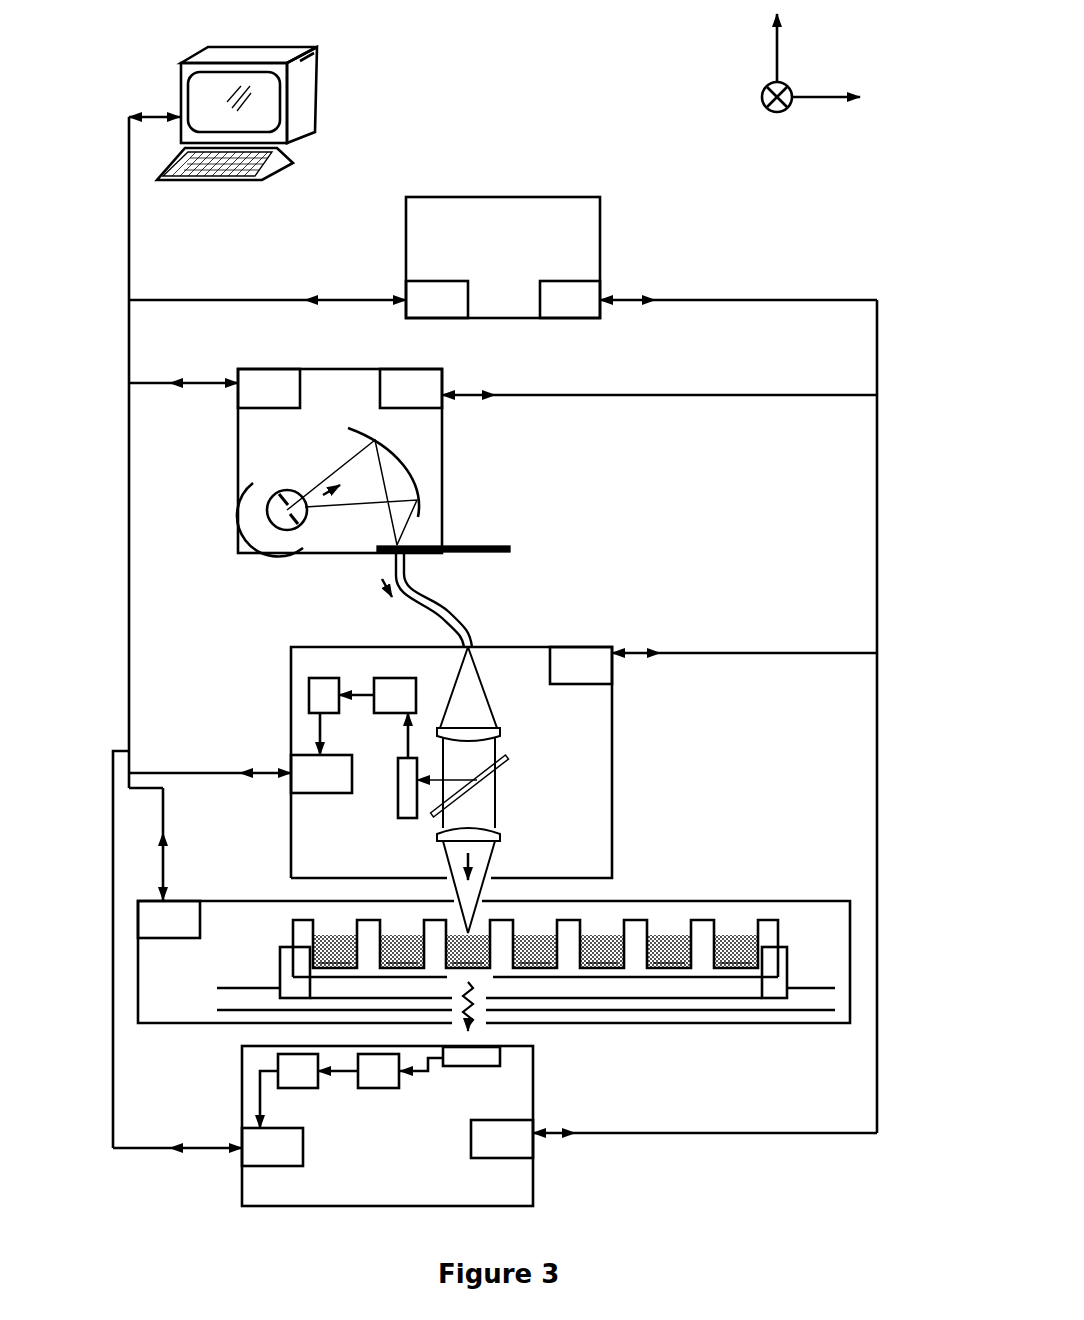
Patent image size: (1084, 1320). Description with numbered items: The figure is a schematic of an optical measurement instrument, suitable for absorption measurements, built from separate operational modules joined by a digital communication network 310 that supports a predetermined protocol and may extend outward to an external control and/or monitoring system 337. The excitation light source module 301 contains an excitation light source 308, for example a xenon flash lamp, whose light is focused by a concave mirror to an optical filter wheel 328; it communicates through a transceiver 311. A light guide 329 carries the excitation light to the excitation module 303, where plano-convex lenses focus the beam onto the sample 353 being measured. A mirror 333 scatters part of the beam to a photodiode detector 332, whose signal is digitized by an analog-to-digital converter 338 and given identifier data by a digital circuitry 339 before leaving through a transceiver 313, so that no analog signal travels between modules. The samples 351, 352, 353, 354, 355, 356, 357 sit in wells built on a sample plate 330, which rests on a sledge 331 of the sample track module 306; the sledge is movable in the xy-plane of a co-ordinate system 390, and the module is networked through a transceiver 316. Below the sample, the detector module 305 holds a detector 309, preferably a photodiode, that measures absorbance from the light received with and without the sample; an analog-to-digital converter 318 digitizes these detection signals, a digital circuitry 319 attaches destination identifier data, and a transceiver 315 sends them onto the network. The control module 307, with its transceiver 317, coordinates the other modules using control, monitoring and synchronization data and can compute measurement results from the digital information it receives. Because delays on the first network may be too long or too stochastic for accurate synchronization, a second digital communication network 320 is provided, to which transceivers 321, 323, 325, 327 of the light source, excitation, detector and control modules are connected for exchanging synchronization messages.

The excitation light source module 301 is at (330, 452).
The excitation module 303 is at (507, 790).
The detector module 305 is at (442, 1126).
The sample track module 306 is at (494, 931).
The control module 307 is at (527, 218).
The excitation light source 308 is at (285, 490).
The detector 309 is at (450, 1066).
The digital communication network 310 is at (129, 262).
The transceiver 311 is at (302, 393).
The transceiver 313 is at (300, 793).
The transceiver 315 is at (258, 1167).
The transceiver 316 is at (183, 900).
The transceiver 317 is at (468, 296).
The analog-to-digital converter 318 is at (365, 1088).
The digital circuitry 319 is at (289, 1088).
The digital communication network 320 is at (877, 472).
The transceiver 321 is at (443, 372).
The transceiver 323 is at (577, 684).
The transceiver 325 is at (478, 1158).
The transceiver 327 is at (602, 287).
The optical filter wheel 328 is at (488, 547).
The light guide 329 is at (452, 614).
The sample plate 330 is at (500, 948).
The sledge 331 is at (280, 965).
The photodiode detector 332 is at (412, 818).
The mirror 333 is at (510, 759).
The external control and/or monitoring system 337 is at (308, 97).
The analog-to-digital converter 338 is at (378, 675).
The digital circuitry 339 is at (332, 715).
The sample 351 is at (335, 951).
The sample 352 is at (402, 951).
The sample 353 is at (468, 951).
The sample 354 is at (535, 951).
The sample 355 is at (602, 951).
The sample 356 is at (669, 951).
The sample 357 is at (736, 951).
The co-ordinate system 390 is at (805, 43).